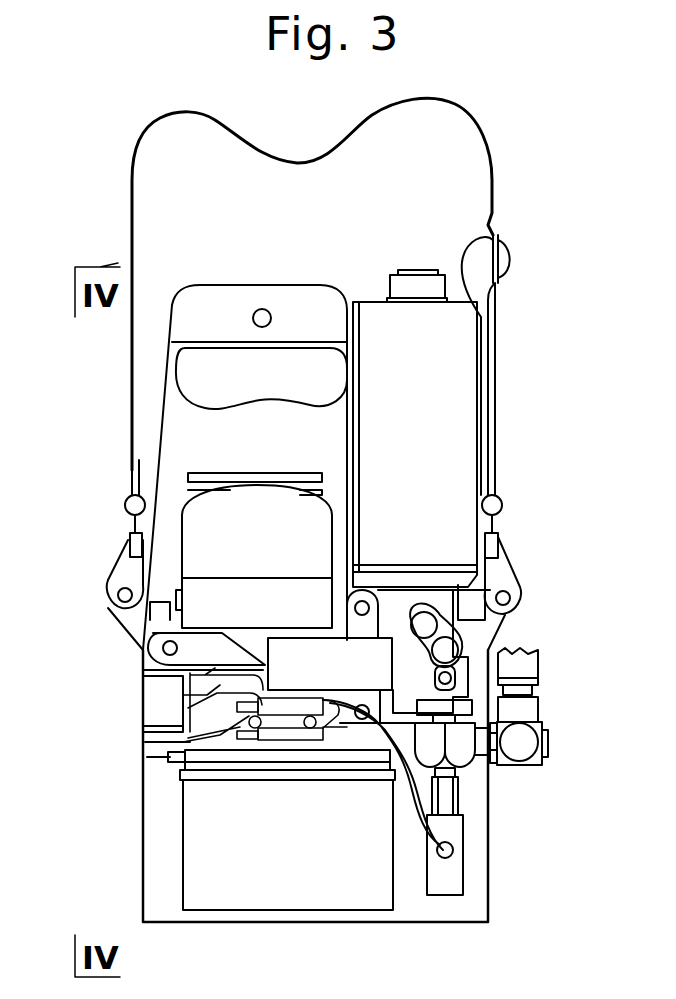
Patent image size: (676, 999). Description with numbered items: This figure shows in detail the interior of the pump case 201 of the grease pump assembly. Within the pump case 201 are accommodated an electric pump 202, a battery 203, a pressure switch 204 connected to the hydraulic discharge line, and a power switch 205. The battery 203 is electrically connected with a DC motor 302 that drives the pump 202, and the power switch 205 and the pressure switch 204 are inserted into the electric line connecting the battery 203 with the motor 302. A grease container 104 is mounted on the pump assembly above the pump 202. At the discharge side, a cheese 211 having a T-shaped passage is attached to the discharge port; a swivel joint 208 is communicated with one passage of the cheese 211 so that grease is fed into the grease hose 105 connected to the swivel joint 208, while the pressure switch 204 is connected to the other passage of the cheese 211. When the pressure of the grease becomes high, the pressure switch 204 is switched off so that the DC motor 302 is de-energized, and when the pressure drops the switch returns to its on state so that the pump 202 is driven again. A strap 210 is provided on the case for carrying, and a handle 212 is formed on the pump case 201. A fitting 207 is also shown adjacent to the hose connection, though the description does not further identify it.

The strap 210 is at (132, 185).
The pump case 201 is at (204, 283).
The handle 212 is at (300, 337).
The grease container 104 is at (367, 313).
The DC motor 302 is at (215, 553).
The electric pump 202 is at (417, 665).
The grease hose 105 is at (525, 662).
The valve fitting 207 is at (520, 692).
The swivel joint 208 is at (543, 717).
The power switch 205 is at (153, 701).
The cheese 211 is at (460, 755).
The battery 203 is at (217, 803).
The pressure switch 204 is at (450, 883).